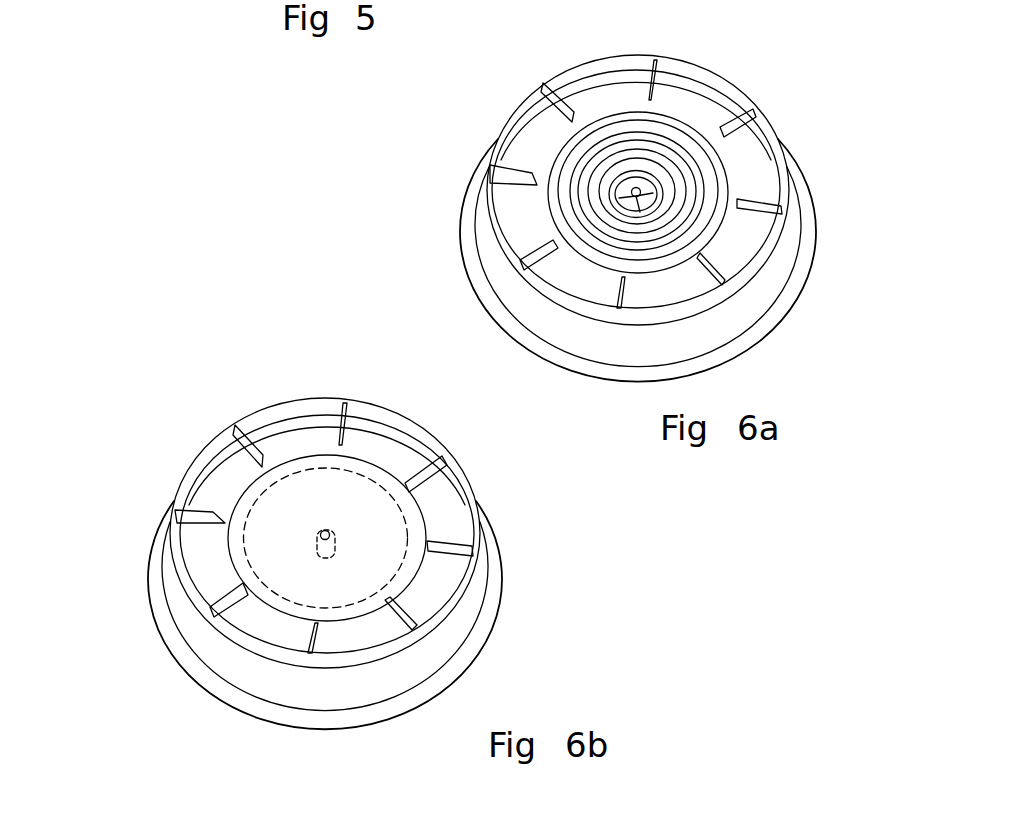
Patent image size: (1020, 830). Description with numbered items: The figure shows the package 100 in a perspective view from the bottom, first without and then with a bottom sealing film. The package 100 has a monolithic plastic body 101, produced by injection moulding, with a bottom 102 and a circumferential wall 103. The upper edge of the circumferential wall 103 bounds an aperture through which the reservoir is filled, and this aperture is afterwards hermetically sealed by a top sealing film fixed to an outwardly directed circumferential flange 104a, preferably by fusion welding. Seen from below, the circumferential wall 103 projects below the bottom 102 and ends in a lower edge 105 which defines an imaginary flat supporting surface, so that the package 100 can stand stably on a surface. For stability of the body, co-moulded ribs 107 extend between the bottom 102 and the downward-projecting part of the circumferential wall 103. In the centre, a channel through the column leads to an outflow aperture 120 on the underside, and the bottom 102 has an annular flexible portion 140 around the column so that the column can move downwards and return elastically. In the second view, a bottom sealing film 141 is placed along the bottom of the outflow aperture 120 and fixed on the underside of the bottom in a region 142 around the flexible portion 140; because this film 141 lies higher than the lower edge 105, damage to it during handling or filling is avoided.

In FIG. 6a, the package 100 is at (436, 168).
In FIG. 6b, the package 100 is at (539, 549).
In FIG. 6a, the monolithic plastic body 101 is at (487, 271).
In FIG. 6b, the monolithic plastic body 101 is at (175, 614).
In FIG. 6a, the bottom 102 is at (530, 133).
In FIG. 6b, the bottom 102 is at (217, 475).
In FIG. 6a, the circumferential wall 103 is at (788, 228).
In FIG. 6b, the circumferential wall 103 is at (480, 573).
In FIG. 6a, the outwardly directed circumferential flange 104a is at (798, 277).
In FIG. 6b, the outwardly directed circumferential flange 104a is at (488, 622).
In FIG. 6a, the lower edge 105 is at (598, 55).
In FIG. 6b, the lower edge 105 is at (290, 397).
In FIG. 6a, the co-moulded ribs 107 is at (756, 110).
In FIG. 6b, the co-moulded ribs 107 is at (447, 458).
In FIG. 6a, the outflow aperture 120 is at (635, 190).
In FIG. 6b, the outflow aperture 120 is at (325, 532).
In FIG. 6a, the annular flexible portion 140 is at (707, 183).
In FIG. 6b, the bottom sealing film 141 is at (363, 522).
In FIG. 6b, the region 142 is at (407, 518).